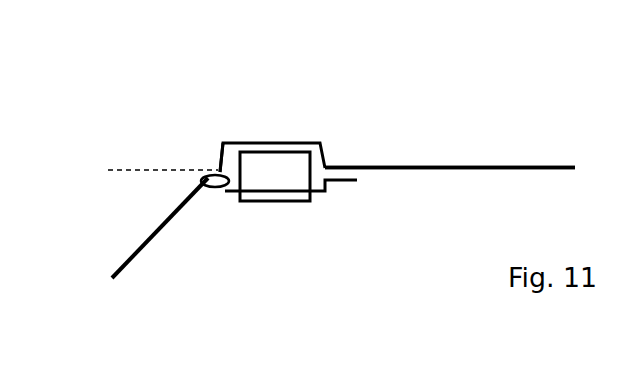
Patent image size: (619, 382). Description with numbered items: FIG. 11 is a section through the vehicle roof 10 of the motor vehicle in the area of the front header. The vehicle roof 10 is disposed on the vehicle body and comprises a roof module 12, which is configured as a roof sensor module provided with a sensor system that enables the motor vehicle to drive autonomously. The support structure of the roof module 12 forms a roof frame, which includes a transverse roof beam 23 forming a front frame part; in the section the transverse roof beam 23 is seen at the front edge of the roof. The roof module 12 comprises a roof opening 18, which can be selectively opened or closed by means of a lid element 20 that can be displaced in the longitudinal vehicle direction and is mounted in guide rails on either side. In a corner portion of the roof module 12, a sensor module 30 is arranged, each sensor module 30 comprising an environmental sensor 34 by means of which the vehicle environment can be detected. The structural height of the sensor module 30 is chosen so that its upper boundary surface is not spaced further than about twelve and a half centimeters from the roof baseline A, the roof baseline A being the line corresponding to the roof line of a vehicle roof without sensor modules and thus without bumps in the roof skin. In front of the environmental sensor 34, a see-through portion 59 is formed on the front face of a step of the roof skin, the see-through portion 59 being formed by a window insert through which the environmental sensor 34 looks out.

The vehicle roof 10 is at (558, 162).
The roof module 12 is at (490, 165).
The roof opening 18 is at (313, 191).
The lid element 20 is at (232, 142).
The transverse roof beam 23 is at (213, 182).
The sensor module 30 is at (260, 182).
The environmental sensor 34 is at (248, 212).
The see-through portion 59 is at (219, 154).
The roof baseline A is at (152, 168).